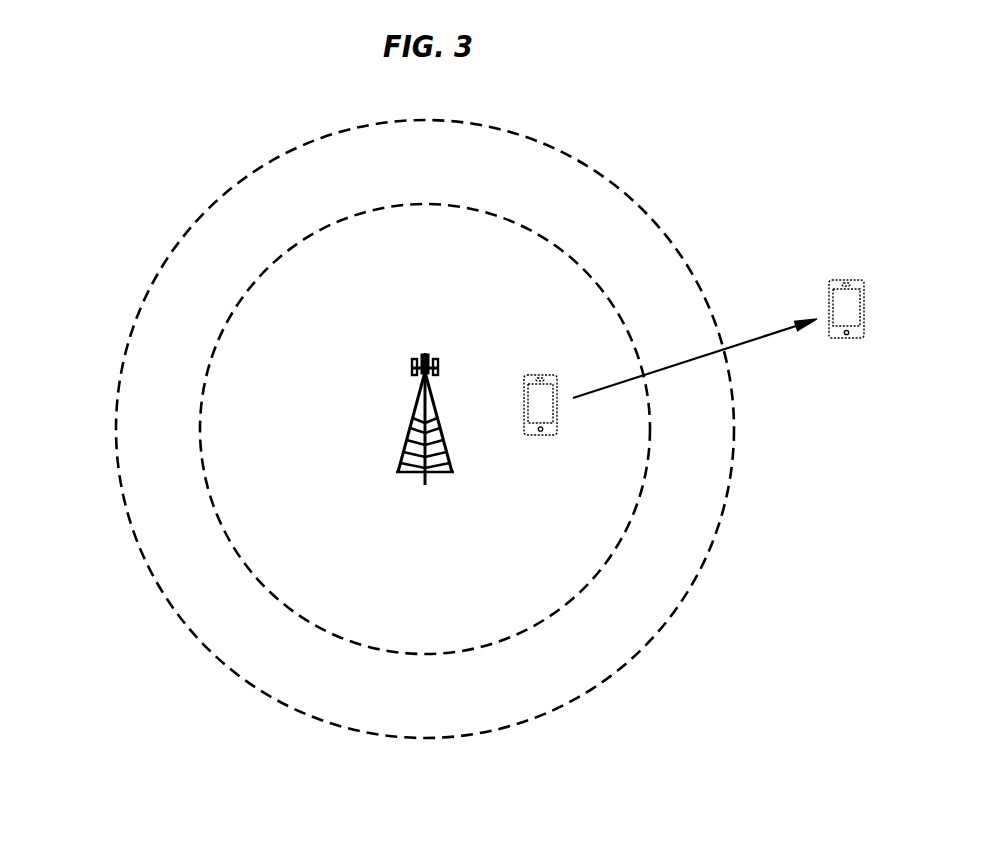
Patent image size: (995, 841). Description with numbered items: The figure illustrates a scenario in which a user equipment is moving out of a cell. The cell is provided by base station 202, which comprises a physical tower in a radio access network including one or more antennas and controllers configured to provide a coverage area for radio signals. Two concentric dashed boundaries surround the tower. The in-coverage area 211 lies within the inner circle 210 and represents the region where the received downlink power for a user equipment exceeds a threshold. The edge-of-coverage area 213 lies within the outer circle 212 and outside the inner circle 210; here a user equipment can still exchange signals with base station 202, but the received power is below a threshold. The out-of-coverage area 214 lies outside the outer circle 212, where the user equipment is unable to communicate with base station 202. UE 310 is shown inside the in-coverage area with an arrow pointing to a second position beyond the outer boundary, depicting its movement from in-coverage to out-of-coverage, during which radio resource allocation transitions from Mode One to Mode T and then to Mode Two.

The base station 202 is at (411, 411).
The circle 210 is at (622, 543).
The in-coverage area 211 is at (406, 596).
The circle 212 is at (123, 500).
The edge-of-coverage area 213 is at (627, 242).
The out-of-coverage area 214 is at (751, 616).
The UE 310 is at (540, 375).